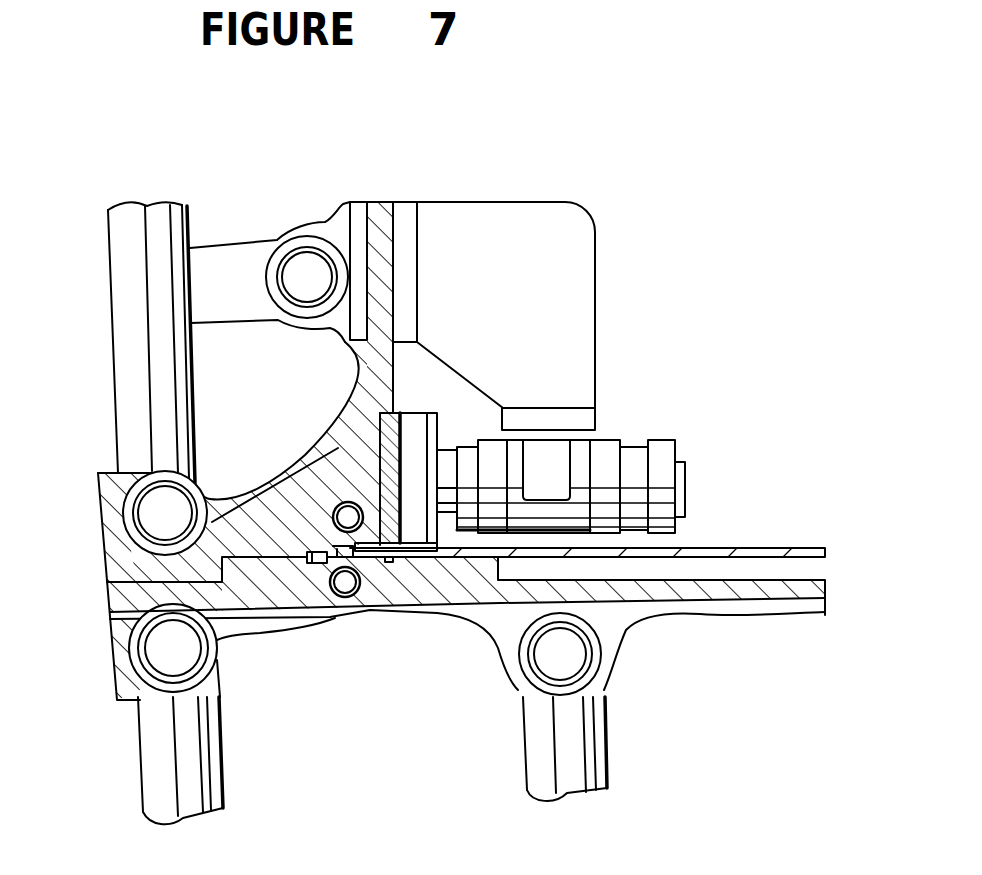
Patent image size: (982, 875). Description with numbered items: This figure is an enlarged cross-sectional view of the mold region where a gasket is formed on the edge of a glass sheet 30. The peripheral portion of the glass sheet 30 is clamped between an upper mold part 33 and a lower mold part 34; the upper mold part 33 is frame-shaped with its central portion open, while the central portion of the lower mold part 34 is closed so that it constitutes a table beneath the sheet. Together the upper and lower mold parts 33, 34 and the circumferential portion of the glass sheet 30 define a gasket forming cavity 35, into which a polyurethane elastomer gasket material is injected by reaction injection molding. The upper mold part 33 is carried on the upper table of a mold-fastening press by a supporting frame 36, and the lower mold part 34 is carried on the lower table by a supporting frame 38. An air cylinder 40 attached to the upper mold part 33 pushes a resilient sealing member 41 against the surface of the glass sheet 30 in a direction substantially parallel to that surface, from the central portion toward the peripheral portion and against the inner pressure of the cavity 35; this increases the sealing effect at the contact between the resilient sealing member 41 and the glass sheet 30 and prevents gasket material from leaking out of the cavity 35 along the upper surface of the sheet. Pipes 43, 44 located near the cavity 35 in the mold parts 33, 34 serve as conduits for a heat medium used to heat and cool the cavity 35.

The glass sheet 30 is at (773, 547).
The upper mold part 33 is at (122, 570).
The lower mold part 34 is at (686, 585).
The gasket forming cavity 35 is at (305, 560).
The supporting frame 36 is at (133, 360).
The supporting frame 38 is at (205, 783).
The air cylinder 40 is at (633, 447).
The resilient sealing member 41 is at (365, 455).
The pipe 43 is at (333, 513).
The pipe 44 is at (350, 597).